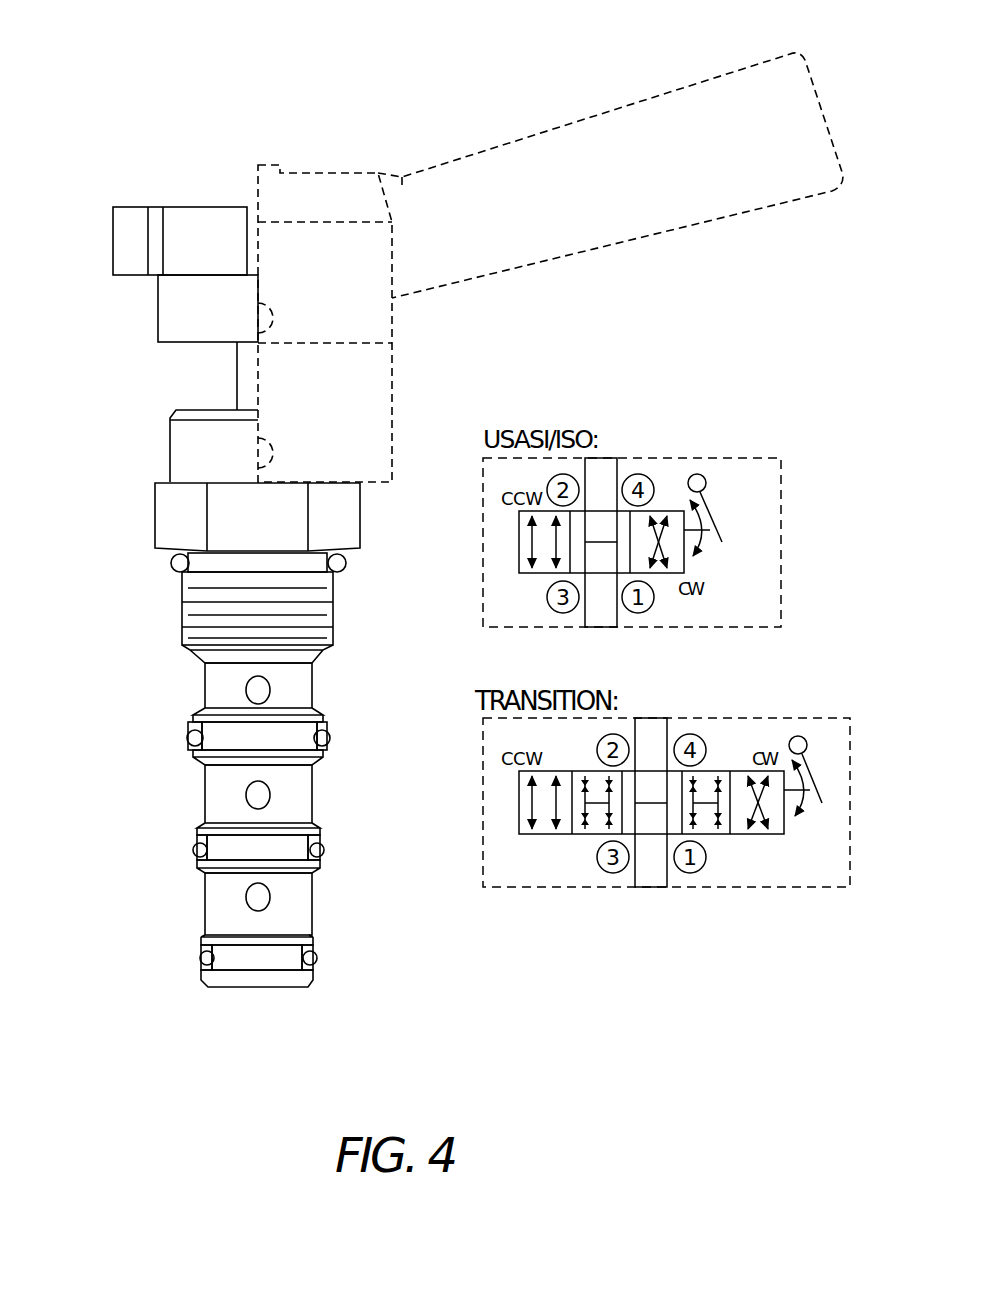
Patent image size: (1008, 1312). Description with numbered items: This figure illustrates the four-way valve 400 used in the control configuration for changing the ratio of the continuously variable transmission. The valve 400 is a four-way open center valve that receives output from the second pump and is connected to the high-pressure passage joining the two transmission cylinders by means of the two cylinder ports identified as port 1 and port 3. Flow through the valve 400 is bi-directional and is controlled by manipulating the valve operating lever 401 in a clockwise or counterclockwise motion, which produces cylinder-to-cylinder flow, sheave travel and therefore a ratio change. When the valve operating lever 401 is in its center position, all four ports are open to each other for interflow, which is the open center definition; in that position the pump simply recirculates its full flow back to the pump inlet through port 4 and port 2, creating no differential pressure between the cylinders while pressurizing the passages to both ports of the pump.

The valve 400 is at (98, 138).
The valve operating lever 401 is at (176, 222).
The cylinder port 1 is at (258, 985).
The port 2 is at (278, 885).
The cylinder port 3 is at (275, 778).
The port 4 is at (278, 692).